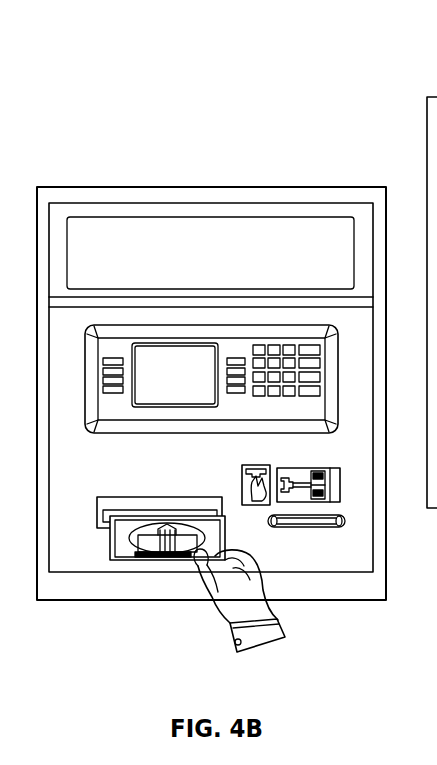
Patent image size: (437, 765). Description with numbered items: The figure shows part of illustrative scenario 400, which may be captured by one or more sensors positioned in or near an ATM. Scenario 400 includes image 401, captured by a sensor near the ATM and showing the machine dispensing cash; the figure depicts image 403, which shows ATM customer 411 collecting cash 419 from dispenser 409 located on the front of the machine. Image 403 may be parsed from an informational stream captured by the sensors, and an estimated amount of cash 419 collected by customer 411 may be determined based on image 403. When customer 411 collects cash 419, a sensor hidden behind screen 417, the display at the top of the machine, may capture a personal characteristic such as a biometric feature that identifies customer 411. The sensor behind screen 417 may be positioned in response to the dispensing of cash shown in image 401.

The scenario 400 is at (358, 38).
The image 401 is at (360, 548).
The image 403 is at (142, 186).
The dispenser 409 is at (97, 508).
The ATM customer 411 is at (232, 625).
The screen 417 is at (258, 238).
The cash 419 is at (142, 561).